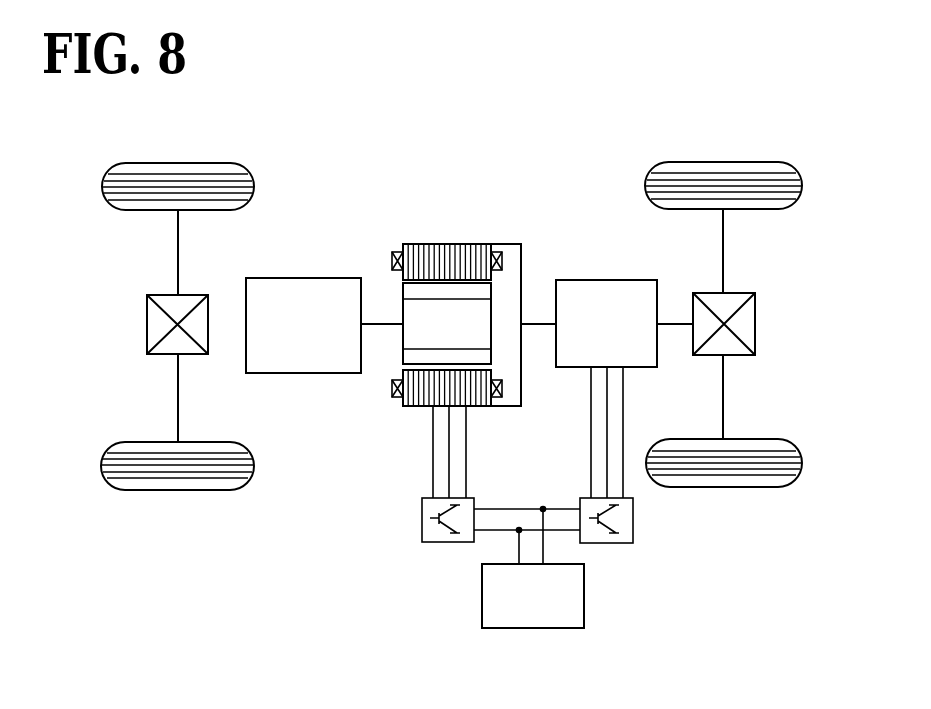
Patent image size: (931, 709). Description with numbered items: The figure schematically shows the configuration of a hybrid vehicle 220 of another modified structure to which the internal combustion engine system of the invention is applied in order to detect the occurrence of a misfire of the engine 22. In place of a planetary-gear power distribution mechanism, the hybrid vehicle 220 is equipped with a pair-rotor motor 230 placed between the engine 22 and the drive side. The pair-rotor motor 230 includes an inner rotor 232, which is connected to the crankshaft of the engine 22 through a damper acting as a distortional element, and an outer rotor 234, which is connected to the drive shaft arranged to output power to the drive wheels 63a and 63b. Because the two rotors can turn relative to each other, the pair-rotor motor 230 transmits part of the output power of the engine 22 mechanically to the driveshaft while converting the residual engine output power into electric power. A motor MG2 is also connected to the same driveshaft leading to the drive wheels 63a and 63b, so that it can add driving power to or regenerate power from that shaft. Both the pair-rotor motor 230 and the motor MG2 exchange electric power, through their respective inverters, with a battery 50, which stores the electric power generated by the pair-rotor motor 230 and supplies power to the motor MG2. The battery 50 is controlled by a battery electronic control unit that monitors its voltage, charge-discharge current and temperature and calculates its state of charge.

The engine 22 is at (303, 374).
The hybrid vehicle 220 is at (551, 168).
The pair-rotor motor 230 is at (452, 177).
The inner rotor 232 is at (402, 308).
The outer rotor 234 is at (448, 245).
The motor MG2 is at (605, 280).
The battery 50 is at (584, 591).
The drive wheel 63a is at (723, 162).
The drive wheel 63b is at (724, 487).